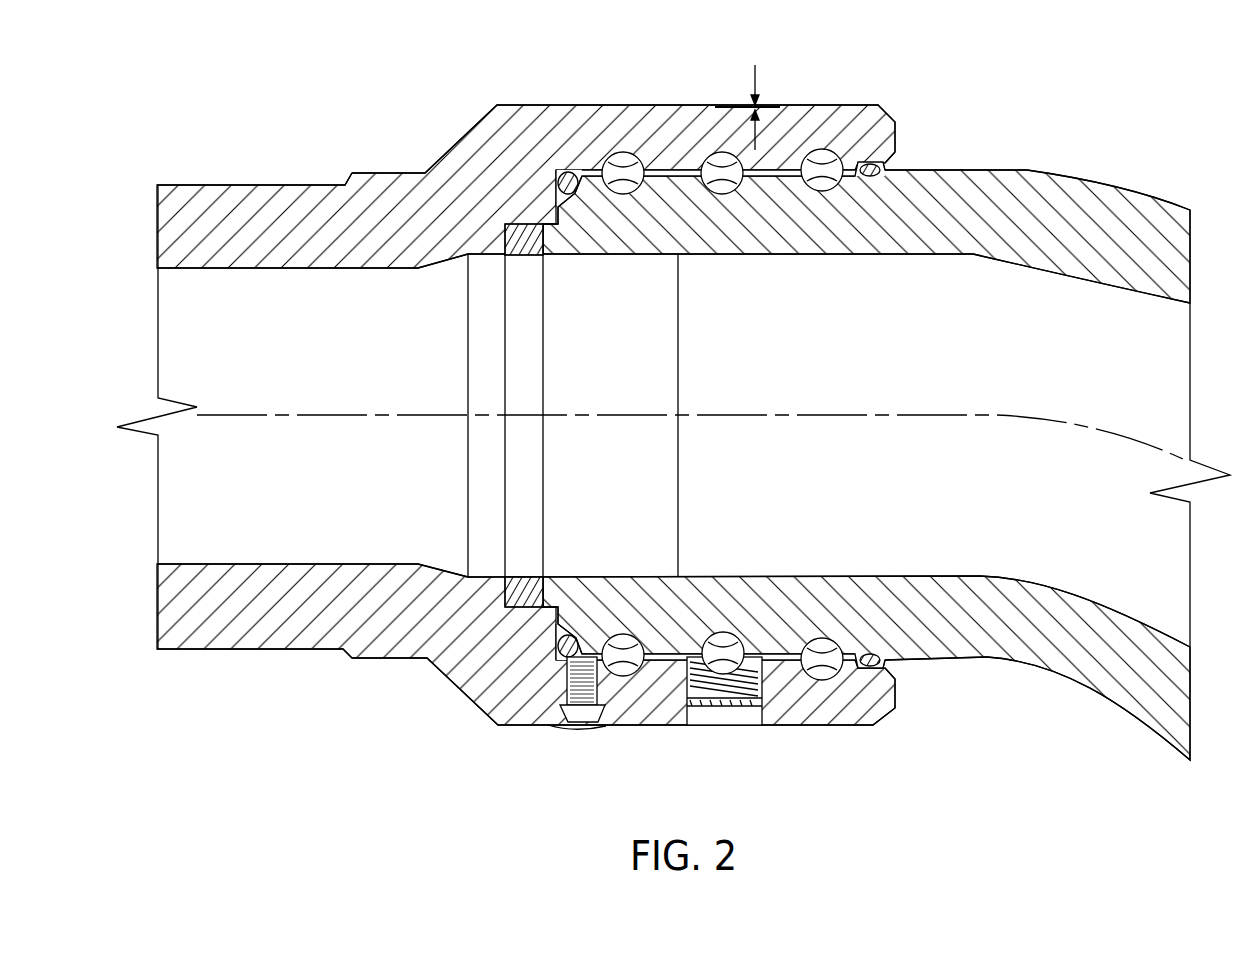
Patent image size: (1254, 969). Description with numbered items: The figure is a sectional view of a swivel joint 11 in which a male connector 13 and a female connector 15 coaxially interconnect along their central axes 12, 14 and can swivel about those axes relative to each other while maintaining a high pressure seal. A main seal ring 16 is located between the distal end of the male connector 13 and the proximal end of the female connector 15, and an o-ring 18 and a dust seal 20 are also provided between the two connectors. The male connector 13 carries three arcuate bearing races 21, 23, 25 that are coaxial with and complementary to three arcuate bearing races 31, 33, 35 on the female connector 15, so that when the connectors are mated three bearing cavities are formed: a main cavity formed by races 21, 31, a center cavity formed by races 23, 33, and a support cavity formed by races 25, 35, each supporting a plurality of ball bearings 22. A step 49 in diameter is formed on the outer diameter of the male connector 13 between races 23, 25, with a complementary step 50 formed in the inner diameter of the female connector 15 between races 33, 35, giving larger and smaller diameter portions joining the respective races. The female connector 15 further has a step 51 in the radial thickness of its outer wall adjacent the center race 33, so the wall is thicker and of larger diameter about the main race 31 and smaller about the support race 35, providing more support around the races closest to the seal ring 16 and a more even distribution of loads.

The swivel joint 11 is at (997, 72).
The central axis 12 is at (326, 413).
The male connector 13 is at (922, 168).
The central axis 14 is at (857, 413).
The female connector 15 is at (512, 727).
The main seal ring 16 is at (524, 570).
The o-ring 18 is at (571, 170).
The dust seal 20 is at (874, 162).
The bearing race 21 is at (637, 193).
The ball bearings 22 is at (825, 665).
The bearing race 23 is at (738, 192).
The bearing race 25 is at (842, 190).
The bearing race 31 is at (638, 152).
The bearing race 33 is at (696, 152).
The bearing race 35 is at (841, 150).
The step in diameter 49 is at (782, 172).
The step in diameter 50 is at (795, 180).
The step in radial thickness 51 is at (747, 91).